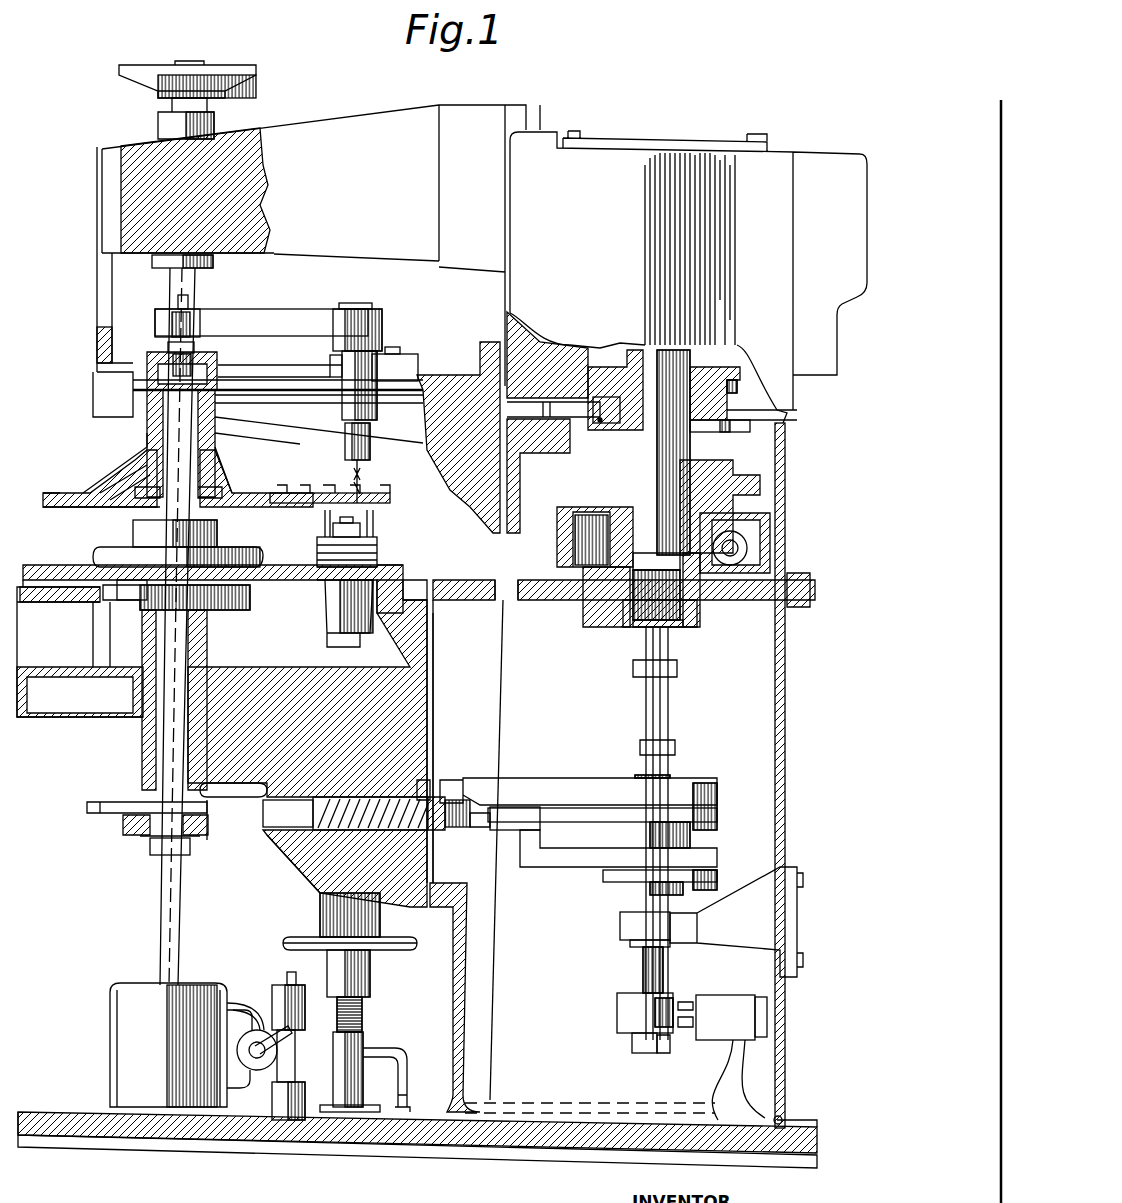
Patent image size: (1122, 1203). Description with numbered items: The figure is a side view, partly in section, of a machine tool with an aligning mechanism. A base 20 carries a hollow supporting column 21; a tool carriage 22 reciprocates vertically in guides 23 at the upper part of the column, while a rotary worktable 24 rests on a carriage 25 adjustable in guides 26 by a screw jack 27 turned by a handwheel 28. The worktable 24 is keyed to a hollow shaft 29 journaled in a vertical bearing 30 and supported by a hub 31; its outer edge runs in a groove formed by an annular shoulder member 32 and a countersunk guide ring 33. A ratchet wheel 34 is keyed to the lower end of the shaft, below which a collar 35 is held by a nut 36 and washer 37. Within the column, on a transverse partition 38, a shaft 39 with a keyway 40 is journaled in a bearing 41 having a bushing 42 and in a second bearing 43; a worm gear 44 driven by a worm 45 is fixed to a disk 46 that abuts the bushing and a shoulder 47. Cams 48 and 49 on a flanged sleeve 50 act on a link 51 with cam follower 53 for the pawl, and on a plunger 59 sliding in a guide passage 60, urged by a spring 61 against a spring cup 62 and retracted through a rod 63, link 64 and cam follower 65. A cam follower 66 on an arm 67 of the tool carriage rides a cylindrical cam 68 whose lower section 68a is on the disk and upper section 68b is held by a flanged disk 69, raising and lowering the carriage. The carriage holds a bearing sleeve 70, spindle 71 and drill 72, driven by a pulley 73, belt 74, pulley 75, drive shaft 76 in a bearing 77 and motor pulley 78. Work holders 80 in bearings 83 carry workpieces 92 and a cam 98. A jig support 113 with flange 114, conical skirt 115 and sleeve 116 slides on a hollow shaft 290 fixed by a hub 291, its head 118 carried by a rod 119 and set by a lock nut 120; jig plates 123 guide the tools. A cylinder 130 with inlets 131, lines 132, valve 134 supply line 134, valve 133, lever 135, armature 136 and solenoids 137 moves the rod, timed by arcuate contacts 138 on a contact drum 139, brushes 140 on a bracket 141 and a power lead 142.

The base 20 is at (507, 1137).
The hollow supporting column 21 is at (783, 713).
The tool carriage 22 is at (384, 128).
The guides 23 is at (540, 130).
The rotary worktable 24 is at (285, 572).
The carriage 25 is at (253, 687).
The guides 26 is at (430, 697).
The screw jack 27 is at (382, 987).
The handwheel 28 is at (287, 943).
The hollow shaft 29 is at (173, 628).
The vertical bearing 30 is at (167, 650).
The hub 31 is at (123, 590).
The annular shoulder member 32 is at (405, 597).
The countersunk guide ring 33 is at (400, 567).
The ratchet wheel 34 is at (100, 813).
The collar 35 is at (210, 830).
The nut 36 is at (163, 855).
The washer 37 is at (147, 840).
The transverse partition 38 is at (538, 595).
The shaft 39 is at (647, 343).
The keyway 40 is at (663, 755).
The bearing 41 is at (700, 623).
The bushing 42 is at (680, 627).
The second bearing 43 is at (620, 927).
The worm gear 44 is at (600, 543).
The worm 45 is at (747, 545).
The disk 46 is at (717, 492).
The shoulder 47 is at (706, 436).
The cam 48 is at (588, 813).
The cam 49 is at (610, 875).
The flanged sleeve 50 is at (670, 783).
The link 51 is at (563, 792).
The cam follower 53 is at (717, 818).
The plunger 59 is at (263, 813).
The horizontal guide passage 60 is at (317, 827).
The spring 61 is at (320, 870).
The spring cup 62 is at (440, 833).
The rod 63 is at (473, 823).
The link 64 is at (547, 857).
The cam follower 65 is at (717, 870).
The cam follower 66 is at (603, 427).
The arm 67 is at (547, 427).
The cylindrical cam 68 is at (713, 428).
The lower section 68a is at (700, 463).
The upper section 68b is at (780, 412).
The flanged disk 69 is at (613, 363).
The bearing sleeve 70 is at (342, 363).
The spindle 71 is at (368, 466).
The drill 72 is at (355, 472).
The pulley 73 is at (372, 312).
The belt 74 is at (282, 315).
The pulley 75 is at (198, 306).
The drive shaft 76 is at (172, 287).
The bearing 77 is at (214, 120).
The pulley 78 is at (140, 78).
The work holder 80 is at (309, 539).
The vertical bearing 83 is at (333, 613).
The workpiece 92 is at (360, 532).
The cam 98 is at (333, 568).
The jig support 113 is at (147, 433).
The peripheral horizontal flange 114 is at (63, 507).
The conical skirt 115 is at (117, 468).
The sleeve 116 is at (133, 500).
The head 118 is at (208, 366).
The rod 119 is at (156, 320).
The lock nut 120 is at (206, 351).
The jig plate 123 is at (387, 497).
The cylinder 130 is at (130, 1020).
The compressed air inlets 131 is at (243, 1077).
The pressure lines 132 is at (263, 1087).
The valve 133 is at (245, 1020).
The compressed air line 134 is at (405, 1082).
The lever 135 is at (267, 1027).
The armature 136 is at (300, 1065).
The solenoids 137 is at (308, 990).
The arcuate contacts 138 is at (620, 1022).
The contact drum 139 is at (627, 997).
The fixed brushes 140 is at (687, 997).
The bracket 141 is at (730, 1003).
The power lead 142 is at (743, 1080).
The hollow shaft 290 is at (185, 435).
The hub 291 is at (100, 555).